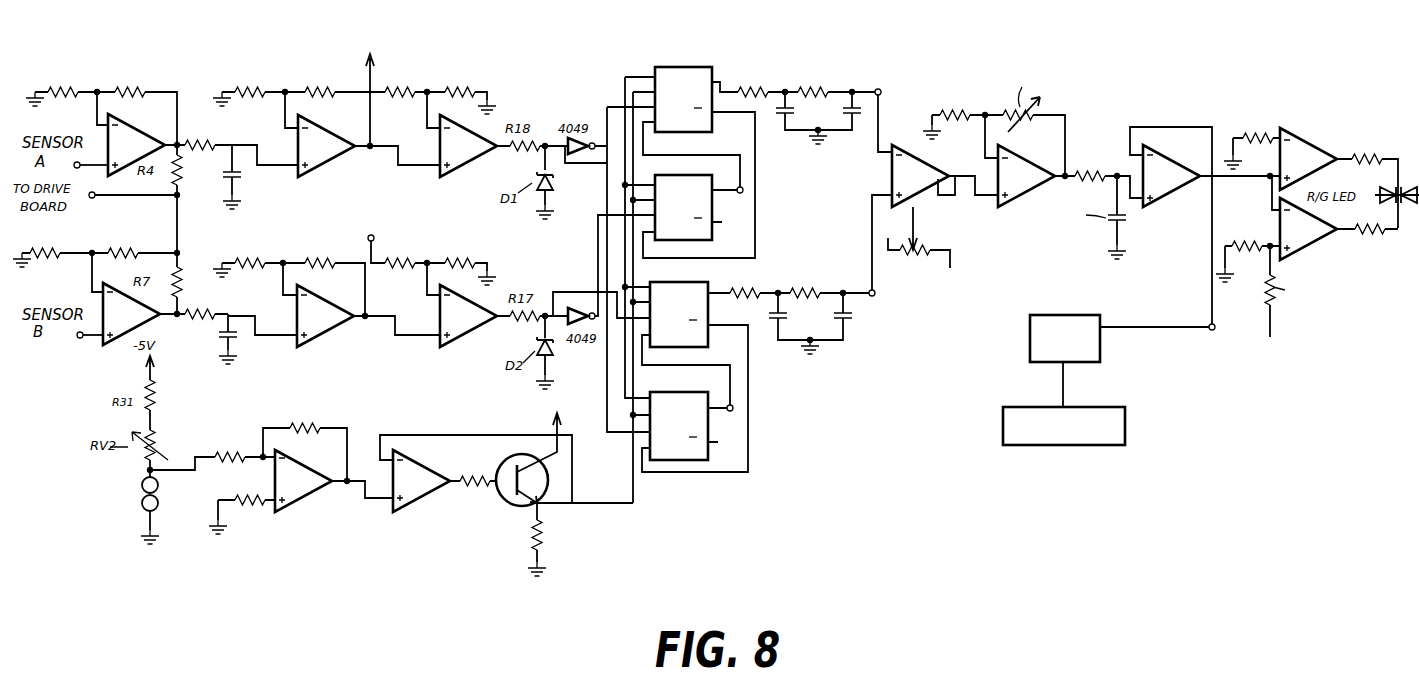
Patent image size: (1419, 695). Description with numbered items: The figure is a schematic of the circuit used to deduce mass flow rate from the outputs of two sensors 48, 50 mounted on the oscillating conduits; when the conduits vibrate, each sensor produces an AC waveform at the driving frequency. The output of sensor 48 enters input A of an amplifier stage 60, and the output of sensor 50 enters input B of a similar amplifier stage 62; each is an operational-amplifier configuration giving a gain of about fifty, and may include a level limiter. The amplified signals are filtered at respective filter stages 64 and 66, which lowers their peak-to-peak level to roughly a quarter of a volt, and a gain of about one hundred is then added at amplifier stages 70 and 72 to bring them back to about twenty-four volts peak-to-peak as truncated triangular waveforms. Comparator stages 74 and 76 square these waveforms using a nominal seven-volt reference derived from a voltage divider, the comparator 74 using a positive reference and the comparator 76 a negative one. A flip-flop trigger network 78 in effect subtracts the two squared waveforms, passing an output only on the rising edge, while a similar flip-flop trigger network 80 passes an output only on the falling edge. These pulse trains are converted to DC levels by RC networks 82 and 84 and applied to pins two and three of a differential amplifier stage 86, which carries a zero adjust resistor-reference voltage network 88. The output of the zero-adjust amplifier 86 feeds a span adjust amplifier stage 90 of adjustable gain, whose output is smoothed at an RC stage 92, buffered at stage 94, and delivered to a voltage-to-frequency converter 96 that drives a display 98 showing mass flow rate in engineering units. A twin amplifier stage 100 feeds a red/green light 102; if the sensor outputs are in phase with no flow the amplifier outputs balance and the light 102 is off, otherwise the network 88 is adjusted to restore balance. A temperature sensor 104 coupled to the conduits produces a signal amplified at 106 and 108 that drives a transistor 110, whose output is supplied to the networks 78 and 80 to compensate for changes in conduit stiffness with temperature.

The sensor 48 is at (80, 168).
The sensor 50 is at (77, 338).
The amplifier stage 60 is at (183, 66).
The amplifier stage 62 is at (113, 387).
The filter stage 64 is at (218, 239).
The filter stage 66 is at (216, 399).
The amplifier stage 70 is at (361, 132).
The amplifier stage 72 is at (359, 302).
The comparator stage 74 is at (481, 199).
The comparator stage 76 is at (478, 372).
The flip-flop trigger network 78 is at (788, 229).
The flip-flop trigger network 80 is at (781, 434).
The RC network 82 is at (854, 54).
The RC network 84 is at (856, 282).
The differential amplifier stage 86 is at (918, 140).
The zero adjust resistor-reference voltage network 88 is at (956, 244).
The span adjust amplifier stage 90 is at (1033, 229).
The RC stage 92 is at (1123, 142).
The buffer stage 94 is at (1184, 230).
The voltage-to-frequency converter 96 is at (1083, 306).
The display 98 is at (1159, 452).
The twin amplifier stage 100 is at (1328, 115).
The red/green light 102 is at (1418, 266).
The temperature sensor 104 is at (198, 504).
The amplifier 106 is at (323, 532).
The amplifier 108 is at (451, 531).
The transistor 110 is at (577, 532).